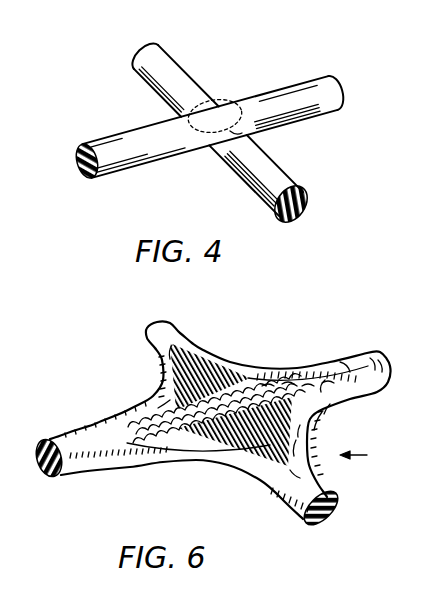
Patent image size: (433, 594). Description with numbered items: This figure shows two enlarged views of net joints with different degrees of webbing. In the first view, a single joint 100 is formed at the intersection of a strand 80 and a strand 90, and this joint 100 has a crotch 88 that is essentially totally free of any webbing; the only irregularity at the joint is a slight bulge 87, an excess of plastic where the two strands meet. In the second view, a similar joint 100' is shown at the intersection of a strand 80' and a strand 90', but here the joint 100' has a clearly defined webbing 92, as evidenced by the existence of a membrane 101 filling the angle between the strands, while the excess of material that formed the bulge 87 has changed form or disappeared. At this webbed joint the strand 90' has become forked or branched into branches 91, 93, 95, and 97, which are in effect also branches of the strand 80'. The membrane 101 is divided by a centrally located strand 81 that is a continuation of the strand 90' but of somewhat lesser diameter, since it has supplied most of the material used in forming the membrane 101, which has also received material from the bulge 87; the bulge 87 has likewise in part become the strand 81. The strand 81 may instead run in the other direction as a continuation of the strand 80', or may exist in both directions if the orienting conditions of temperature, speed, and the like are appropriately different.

In FIG. 4, the strand 80 is at (230, 136).
In FIG. 4, the strand 90 is at (218, 116).
In FIG. 4, the bulge 87 is at (240, 116).
In FIG. 4, the crotch 88 is at (253, 135).
In FIG. 4, the joint 100 is at (218, 136).
In FIG. 6, the joint 100' is at (218, 420).
In FIG. 6, the strand 80' is at (324, 471).
In FIG. 6, the strand 90' is at (331, 351).
In FIG. 6, the strand 81 is at (293, 383).
In FIG. 6, the branch 91 is at (238, 368).
In FIG. 6, the webbing 92 is at (366, 455).
In FIG. 6, the branch 93 is at (323, 410).
In FIG. 6, the branch 95 is at (163, 380).
In FIG. 6, the branch 97 is at (210, 448).
In FIG. 6, the membrane 101 is at (203, 370).